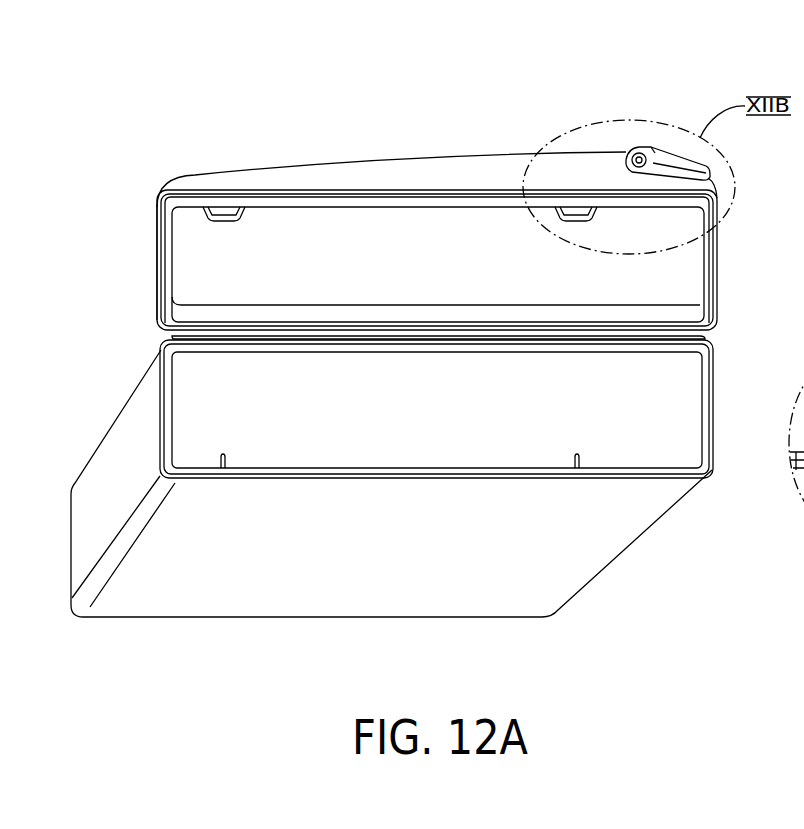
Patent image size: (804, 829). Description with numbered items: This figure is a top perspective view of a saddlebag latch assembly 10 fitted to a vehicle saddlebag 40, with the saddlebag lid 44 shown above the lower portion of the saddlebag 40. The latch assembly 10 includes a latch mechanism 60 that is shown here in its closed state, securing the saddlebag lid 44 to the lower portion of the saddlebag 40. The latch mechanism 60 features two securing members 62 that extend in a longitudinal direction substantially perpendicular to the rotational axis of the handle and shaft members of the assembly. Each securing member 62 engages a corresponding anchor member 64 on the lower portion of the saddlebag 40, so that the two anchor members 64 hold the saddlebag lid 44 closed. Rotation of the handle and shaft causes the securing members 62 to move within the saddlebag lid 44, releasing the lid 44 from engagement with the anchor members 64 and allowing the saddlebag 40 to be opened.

The saddlebag latch assembly 10 is at (667, 128).
The saddlebag 40 is at (120, 338).
The saddlebag lid 44 is at (146, 258).
The latch mechanism 60 is at (441, 148).
The securing member 62 is at (229, 207).
The anchor member 64 is at (226, 463).